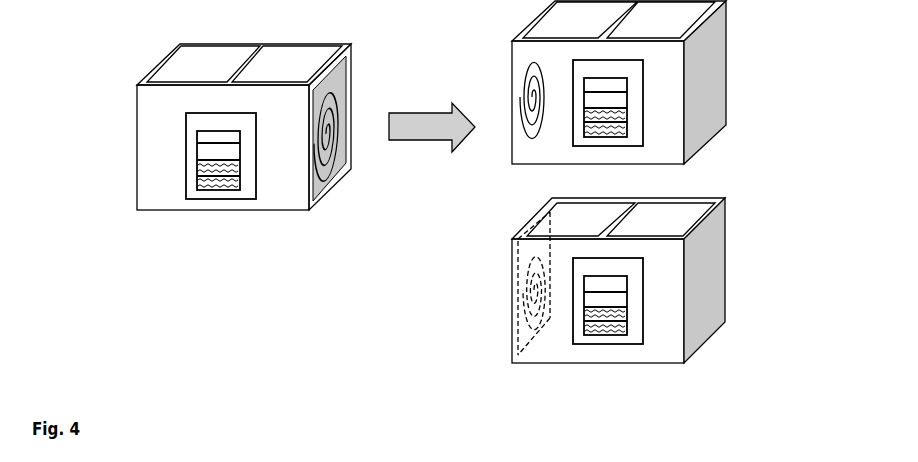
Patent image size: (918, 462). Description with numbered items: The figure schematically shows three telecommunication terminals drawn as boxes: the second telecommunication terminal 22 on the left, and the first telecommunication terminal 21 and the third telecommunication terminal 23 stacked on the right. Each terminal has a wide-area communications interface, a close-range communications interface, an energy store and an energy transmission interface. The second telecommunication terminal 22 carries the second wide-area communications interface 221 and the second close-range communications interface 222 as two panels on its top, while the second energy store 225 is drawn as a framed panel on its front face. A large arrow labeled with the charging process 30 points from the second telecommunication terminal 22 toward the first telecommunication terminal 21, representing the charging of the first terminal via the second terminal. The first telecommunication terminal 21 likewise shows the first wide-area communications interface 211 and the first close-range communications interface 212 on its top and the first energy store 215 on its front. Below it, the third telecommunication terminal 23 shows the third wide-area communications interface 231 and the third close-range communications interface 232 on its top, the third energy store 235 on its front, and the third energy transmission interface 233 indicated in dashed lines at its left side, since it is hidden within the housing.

The second telecommunication terminal 22 is at (244, 140).
The second wide-area communications interface 221 is at (203, 64).
The second close-range communications interface 222 is at (287, 64).
The second energy store 225 is at (186, 168).
The charging process 30 is at (427, 127).
The first telecommunication terminal 21 is at (713, 145).
The first wide-area communications interface 211 is at (580, 20).
The first close-range communications interface 212 is at (661, 20).
The first energy store 215 is at (643, 122).
The third telecommunication terminal 23 is at (715, 345).
The third wide-area communications interface 231 is at (581, 219).
The third close-range communications interface 232 is at (661, 219).
The third energy transmission interface 233 is at (542, 250).
The third energy store 235 is at (643, 313).